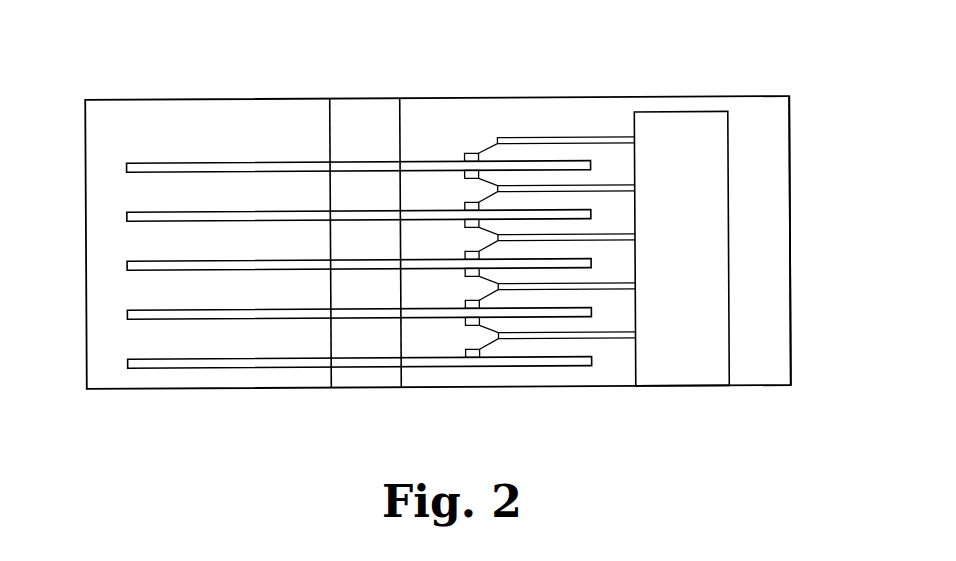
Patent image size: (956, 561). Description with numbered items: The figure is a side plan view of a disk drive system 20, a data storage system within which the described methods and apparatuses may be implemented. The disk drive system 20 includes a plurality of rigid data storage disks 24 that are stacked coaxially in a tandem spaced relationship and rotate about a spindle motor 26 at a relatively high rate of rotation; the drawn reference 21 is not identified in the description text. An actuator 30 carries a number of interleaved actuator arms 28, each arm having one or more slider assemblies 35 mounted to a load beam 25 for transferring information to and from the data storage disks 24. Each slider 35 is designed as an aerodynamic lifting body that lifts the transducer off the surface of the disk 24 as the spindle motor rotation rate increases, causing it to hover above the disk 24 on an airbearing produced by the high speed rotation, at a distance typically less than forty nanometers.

The disk drive system 20 is at (669, 63).
The substrate body 21 is at (792, 238).
The data storage disks 24 is at (127, 169).
The load beam 25 is at (485, 150).
The spindle motor 26 is at (360, 387).
The actuator arms 28 is at (535, 138).
The actuator 30 is at (677, 365).
The slider 35 is at (465, 157).